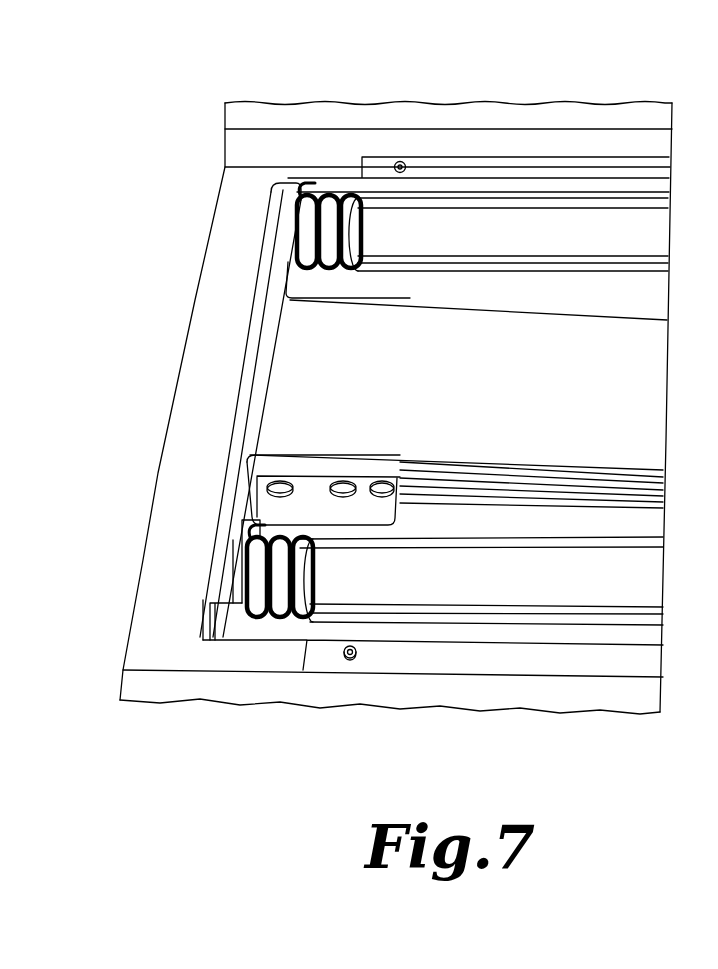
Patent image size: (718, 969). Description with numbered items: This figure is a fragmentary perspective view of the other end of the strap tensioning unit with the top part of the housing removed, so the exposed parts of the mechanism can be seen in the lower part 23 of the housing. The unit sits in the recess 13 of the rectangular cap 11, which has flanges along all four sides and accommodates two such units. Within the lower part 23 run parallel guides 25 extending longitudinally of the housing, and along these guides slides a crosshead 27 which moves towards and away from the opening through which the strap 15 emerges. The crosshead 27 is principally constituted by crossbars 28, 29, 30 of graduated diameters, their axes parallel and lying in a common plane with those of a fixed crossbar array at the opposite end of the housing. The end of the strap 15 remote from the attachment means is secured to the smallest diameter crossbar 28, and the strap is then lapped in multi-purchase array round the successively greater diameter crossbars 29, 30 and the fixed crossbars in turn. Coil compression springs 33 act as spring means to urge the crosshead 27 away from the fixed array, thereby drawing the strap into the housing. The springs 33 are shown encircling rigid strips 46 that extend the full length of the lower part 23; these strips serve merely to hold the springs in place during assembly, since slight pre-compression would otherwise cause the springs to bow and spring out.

The rectangular cap 11 is at (538, 98).
The recess 13 is at (240, 155).
The strap 15 is at (630, 355).
The lower part of the housing 23 is at (267, 313).
The parallel guides 25 is at (526, 618).
The crosshead 27 is at (297, 185).
The smallest diameter crossbar 28 is at (385, 490).
The crossbar 29 is at (343, 490).
The crossbar 30 is at (287, 463).
The coil compression springs 33 is at (330, 190).
The rigid strips 46 is at (545, 228).